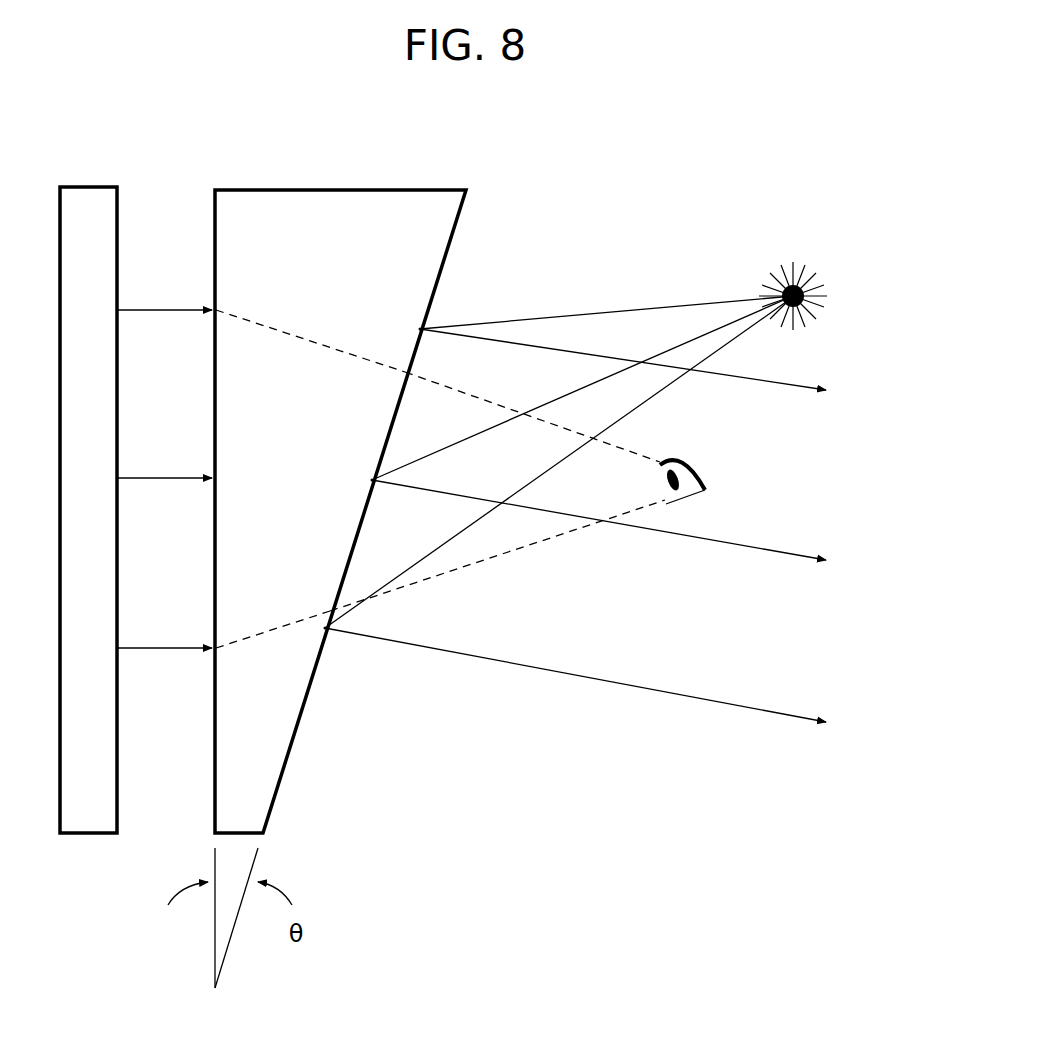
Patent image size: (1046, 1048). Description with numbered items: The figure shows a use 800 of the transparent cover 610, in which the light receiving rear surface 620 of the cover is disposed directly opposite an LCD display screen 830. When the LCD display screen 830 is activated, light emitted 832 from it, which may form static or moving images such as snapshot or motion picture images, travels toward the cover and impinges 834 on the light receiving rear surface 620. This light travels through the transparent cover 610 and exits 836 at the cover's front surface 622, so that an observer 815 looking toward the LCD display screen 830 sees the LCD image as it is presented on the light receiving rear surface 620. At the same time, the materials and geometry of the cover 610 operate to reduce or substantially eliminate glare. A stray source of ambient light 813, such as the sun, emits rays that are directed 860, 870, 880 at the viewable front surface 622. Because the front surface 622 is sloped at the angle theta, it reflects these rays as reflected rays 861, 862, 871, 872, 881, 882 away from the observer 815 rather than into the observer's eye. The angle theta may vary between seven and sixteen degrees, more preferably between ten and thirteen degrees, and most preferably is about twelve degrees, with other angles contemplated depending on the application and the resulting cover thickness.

The use of the transparent cover 800 is at (664, 125).
The LCD display screen 830 is at (88, 510).
The transparent cover 610 is at (340, 511).
The light receiving rear surface 620 is at (211, 762).
The front surface 622 is at (292, 748).
The light emitted from the LCD display screen 832 is at (165, 497).
The impingement of light on the cover 834 is at (214, 308).
The exit of light from the cover 836 is at (404, 372).
The reflected ray 861 is at (419, 329).
The reflected ray 871 is at (371, 480).
The reflected ray 881 is at (325, 628).
The directed ambient light ray 860 is at (684, 306).
The reflected ray 862 is at (794, 386).
The directed ambient light ray 870 is at (656, 356).
The reflected ray 872 is at (797, 557).
The directed ambient light ray 880 is at (667, 388).
The reflected ray 882 is at (800, 720).
The stray source of ambient light 813 is at (806, 276).
The observer 815 is at (684, 457).